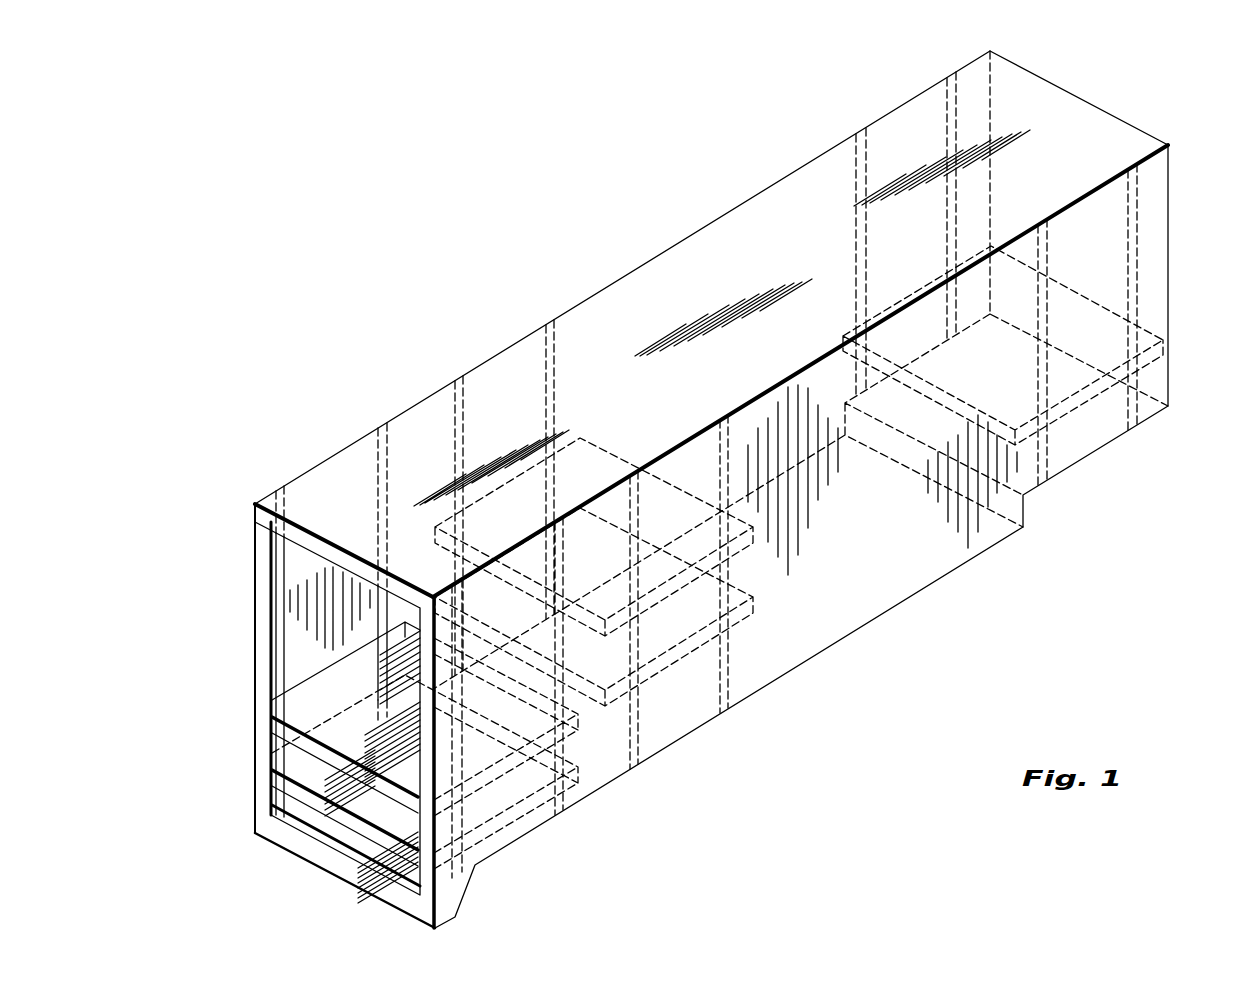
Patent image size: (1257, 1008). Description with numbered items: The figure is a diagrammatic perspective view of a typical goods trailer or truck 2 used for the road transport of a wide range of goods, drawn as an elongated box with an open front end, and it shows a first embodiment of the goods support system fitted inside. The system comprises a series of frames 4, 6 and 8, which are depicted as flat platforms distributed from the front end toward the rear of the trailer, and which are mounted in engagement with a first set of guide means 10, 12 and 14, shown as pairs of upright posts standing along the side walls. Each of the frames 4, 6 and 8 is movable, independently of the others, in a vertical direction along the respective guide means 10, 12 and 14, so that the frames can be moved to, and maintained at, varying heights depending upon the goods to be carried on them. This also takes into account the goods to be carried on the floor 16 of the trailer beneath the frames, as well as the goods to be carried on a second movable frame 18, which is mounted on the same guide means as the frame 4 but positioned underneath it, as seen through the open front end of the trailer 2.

The trailer or truck 2 is at (1152, 258).
The frame 4 is at (342, 726).
The frame 6 is at (760, 555).
The frame 8 is at (1138, 368).
The guide means 10 is at (376, 470).
The guide means 12 is at (545, 382).
The guide means 14 is at (868, 146).
The floor 16 is at (365, 842).
The second movable frame 18 is at (338, 794).